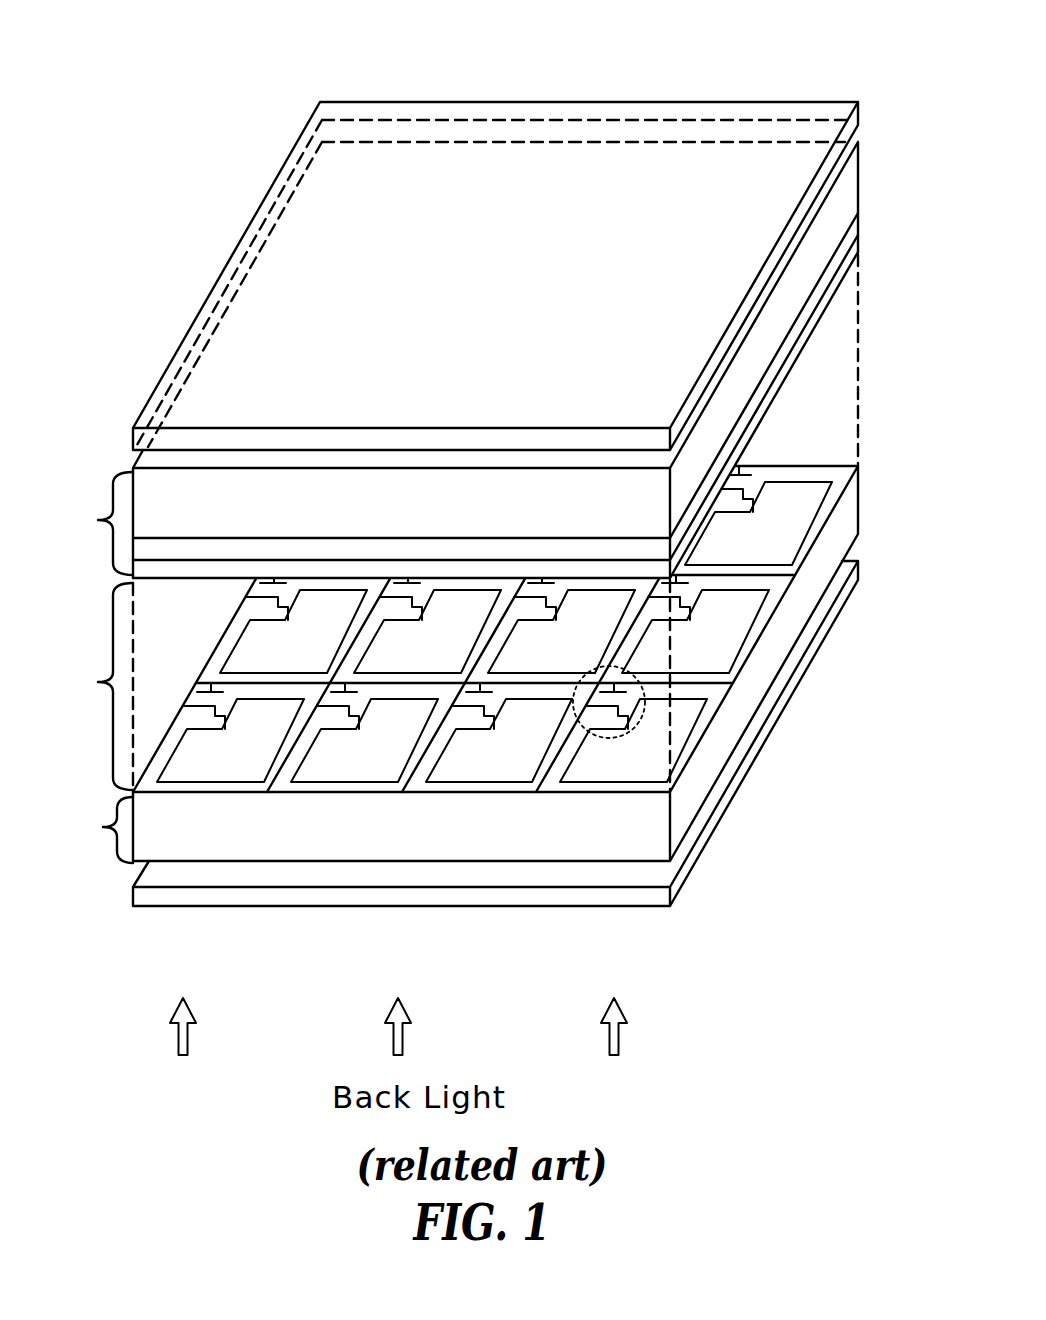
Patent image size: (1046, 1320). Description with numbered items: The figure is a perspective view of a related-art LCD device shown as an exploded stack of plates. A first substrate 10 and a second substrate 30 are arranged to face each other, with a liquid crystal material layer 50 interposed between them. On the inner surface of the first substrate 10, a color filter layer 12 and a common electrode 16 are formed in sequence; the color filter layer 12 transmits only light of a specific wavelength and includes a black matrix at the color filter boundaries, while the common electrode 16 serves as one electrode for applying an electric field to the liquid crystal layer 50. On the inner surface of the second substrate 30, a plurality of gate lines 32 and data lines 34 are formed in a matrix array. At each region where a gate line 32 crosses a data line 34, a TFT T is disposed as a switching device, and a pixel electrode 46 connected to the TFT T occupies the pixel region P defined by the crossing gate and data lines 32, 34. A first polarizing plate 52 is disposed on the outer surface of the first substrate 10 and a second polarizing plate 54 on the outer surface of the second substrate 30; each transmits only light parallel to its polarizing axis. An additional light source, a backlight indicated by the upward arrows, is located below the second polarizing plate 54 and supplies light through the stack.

The first substrate 10 is at (454, 360).
The color filter (C/F) layer 12 is at (858, 224).
The common electrode 16 is at (858, 244).
The first polarizing plate 52 is at (818, 104).
The second substrate 30 is at (460, 664).
The liquid crystal material layer 50 is at (455, 629).
The second polarizing plate 54 is at (802, 682).
The gate line 32 is at (523, 688).
The data line 34 is at (560, 757).
The pixel region P is at (310, 793).
The TFT T is at (612, 746).
The pixel electrode 46 is at (650, 743).